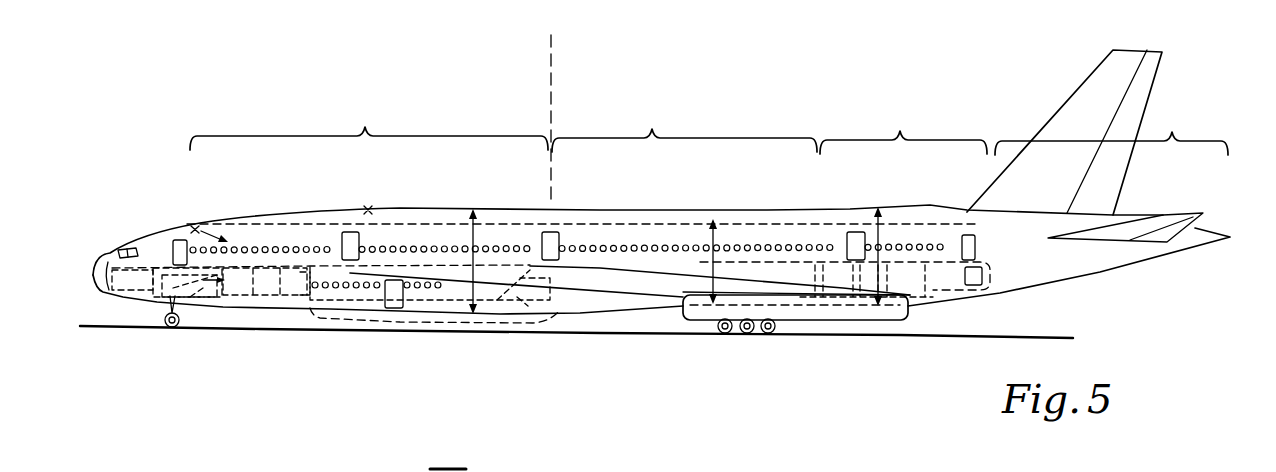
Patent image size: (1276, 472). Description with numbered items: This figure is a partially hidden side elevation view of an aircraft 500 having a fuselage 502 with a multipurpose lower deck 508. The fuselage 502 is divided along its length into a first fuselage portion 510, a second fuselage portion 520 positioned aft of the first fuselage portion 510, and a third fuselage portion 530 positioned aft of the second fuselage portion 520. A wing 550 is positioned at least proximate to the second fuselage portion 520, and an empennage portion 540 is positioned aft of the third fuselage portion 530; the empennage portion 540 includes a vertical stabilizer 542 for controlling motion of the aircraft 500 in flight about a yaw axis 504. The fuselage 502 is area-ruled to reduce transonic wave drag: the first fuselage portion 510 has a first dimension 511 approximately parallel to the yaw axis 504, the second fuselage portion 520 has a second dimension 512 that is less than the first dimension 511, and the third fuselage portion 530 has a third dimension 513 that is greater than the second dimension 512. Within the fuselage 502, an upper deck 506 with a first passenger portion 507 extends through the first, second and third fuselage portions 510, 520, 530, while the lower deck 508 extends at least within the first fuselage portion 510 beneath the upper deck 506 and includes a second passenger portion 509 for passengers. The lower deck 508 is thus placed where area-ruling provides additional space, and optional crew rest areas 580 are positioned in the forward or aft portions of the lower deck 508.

The aircraft 500 is at (186, 110).
The fuselage 502 is at (133, 242).
The yaw axis 504 is at (550, 88).
The upper deck 506 is at (192, 222).
The first passenger portion 507 is at (368, 222).
The multipurpose lower deck 508 is at (162, 300).
The second passenger portion 509 is at (395, 326).
The first fuselage portion 510 is at (365, 127).
The first dimension 511 is at (472, 232).
The second dimension 512 is at (710, 232).
The third dimension 513 is at (873, 223).
The second fuselage portion 520 is at (652, 129).
The third fuselage portion 530 is at (900, 131).
The empennage portion 540 is at (1172, 132).
The vertical stabilizer 542 is at (1063, 100).
The wing 550 is at (624, 293).
The crew rest areas 580 is at (115, 291).